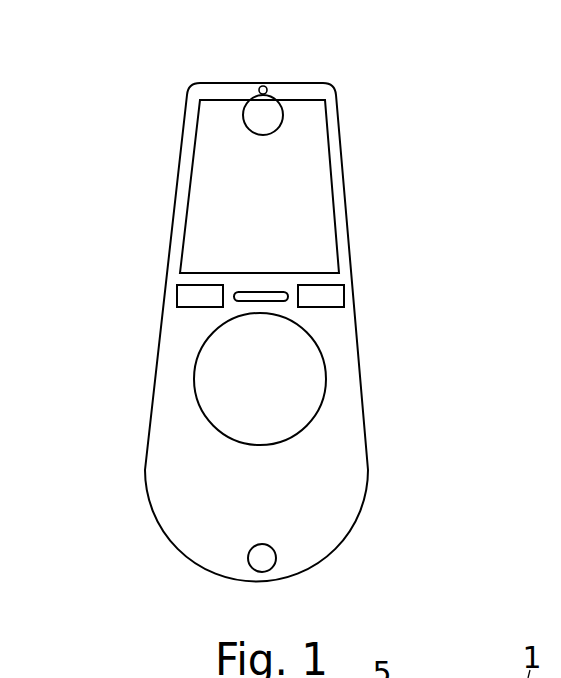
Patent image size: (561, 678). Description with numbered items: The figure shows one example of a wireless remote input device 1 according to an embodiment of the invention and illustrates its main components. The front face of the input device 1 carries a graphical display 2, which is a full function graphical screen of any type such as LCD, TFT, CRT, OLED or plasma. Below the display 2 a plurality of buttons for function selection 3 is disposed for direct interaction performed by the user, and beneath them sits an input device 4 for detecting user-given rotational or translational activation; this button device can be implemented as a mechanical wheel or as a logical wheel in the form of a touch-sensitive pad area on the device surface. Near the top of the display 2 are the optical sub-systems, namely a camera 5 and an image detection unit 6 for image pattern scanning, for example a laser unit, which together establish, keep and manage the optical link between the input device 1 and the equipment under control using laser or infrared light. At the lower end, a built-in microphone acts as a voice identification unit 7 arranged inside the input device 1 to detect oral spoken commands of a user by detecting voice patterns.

The wireless remote input device 1 is at (312, 83).
The graphical display 2 is at (313, 210).
The buttons for function selection 3 is at (192, 293).
The input device for rotational activation 4 is at (310, 383).
The camera 5 is at (282, 112).
The image detection unit 6 is at (259, 88).
The voice identification unit 7 is at (258, 555).